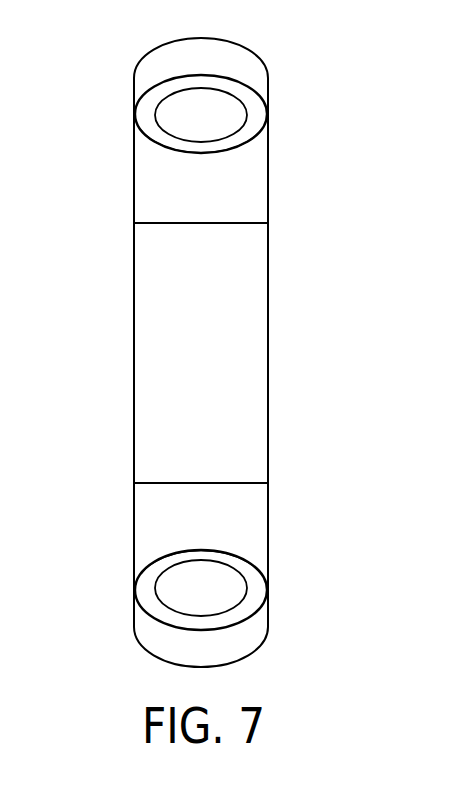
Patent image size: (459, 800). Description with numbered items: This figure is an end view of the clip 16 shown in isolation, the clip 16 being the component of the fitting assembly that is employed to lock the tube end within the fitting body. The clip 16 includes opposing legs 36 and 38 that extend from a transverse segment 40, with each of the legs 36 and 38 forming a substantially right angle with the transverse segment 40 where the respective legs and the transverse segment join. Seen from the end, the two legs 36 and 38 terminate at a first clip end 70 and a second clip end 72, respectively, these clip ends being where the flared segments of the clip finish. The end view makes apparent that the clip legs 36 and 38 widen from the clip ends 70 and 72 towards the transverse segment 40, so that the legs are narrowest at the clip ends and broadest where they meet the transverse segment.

The clip 16 is at (335, 85).
The leg 36 is at (255, 117).
The leg 38 is at (257, 590).
The transverse segment 40 is at (268, 352).
The first clip end 70 is at (183, 118).
The second clip end 72 is at (173, 593).